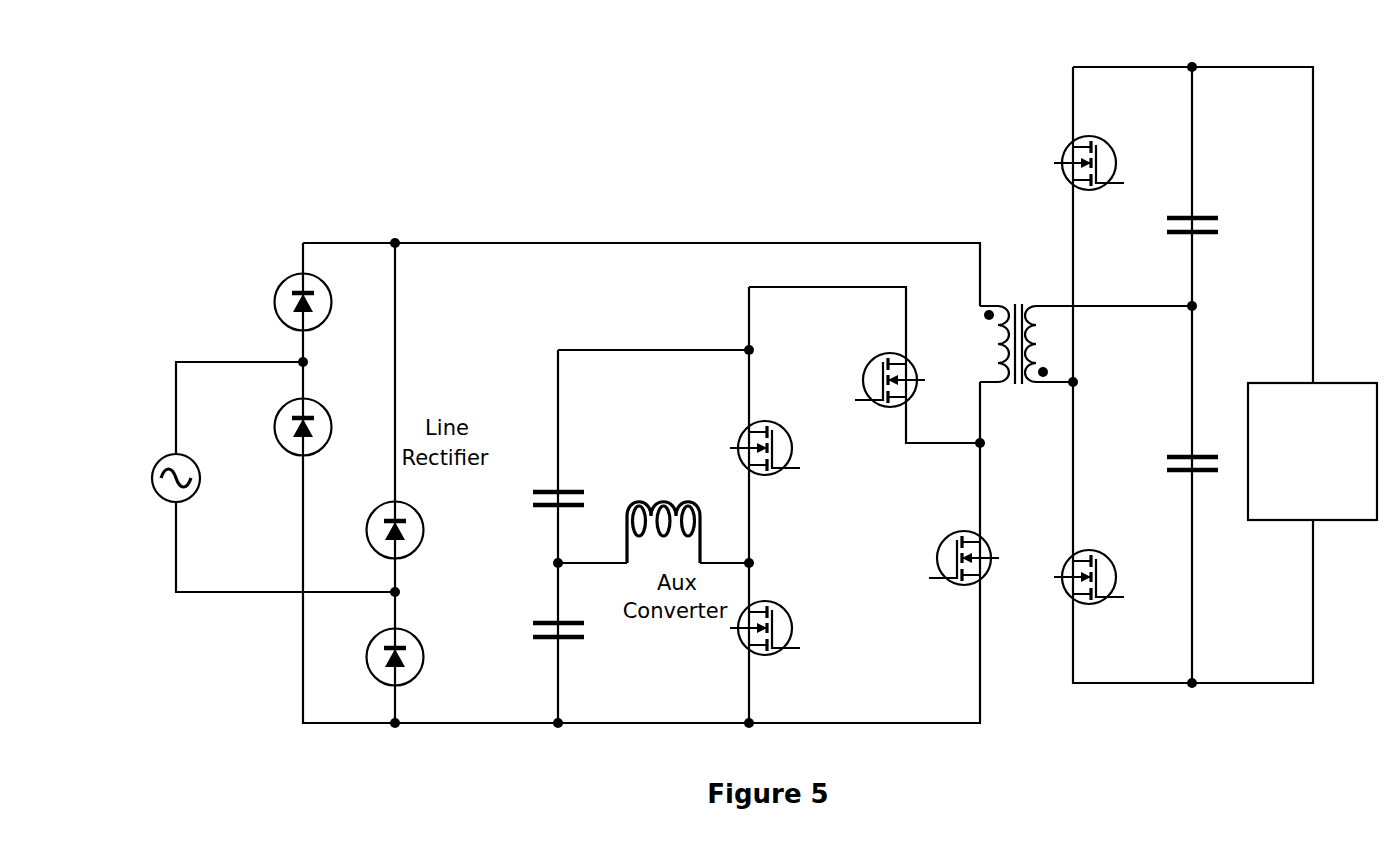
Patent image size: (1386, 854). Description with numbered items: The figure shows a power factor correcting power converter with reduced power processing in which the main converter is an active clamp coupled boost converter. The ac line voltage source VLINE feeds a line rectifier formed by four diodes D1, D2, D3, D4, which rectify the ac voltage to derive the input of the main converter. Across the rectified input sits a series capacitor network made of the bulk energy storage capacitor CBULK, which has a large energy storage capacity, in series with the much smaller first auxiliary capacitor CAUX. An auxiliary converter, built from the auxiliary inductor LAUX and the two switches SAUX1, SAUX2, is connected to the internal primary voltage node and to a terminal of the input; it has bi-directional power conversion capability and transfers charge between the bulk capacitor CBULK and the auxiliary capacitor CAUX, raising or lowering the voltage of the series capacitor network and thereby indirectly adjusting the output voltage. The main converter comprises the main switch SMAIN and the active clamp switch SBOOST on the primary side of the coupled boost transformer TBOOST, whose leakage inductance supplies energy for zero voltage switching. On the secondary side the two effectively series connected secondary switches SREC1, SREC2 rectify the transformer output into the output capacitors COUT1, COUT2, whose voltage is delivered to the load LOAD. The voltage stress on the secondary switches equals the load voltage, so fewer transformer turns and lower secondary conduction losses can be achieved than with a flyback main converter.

The ac line voltage source VLINE is at (177, 467).
The line rectifier diode D1 is at (318, 302).
The line rectifier diode D2 is at (318, 427).
The line rectifier diode D3 is at (411, 530).
The line rectifier diode D4 is at (411, 657).
The bulk energy storage capacitor CBULK is at (528, 503).
The first auxiliary capacitor CAUX is at (532, 631).
The auxiliary inductor LAUX is at (663, 517).
The auxiliary converter switch SAUX1 is at (765, 435).
The auxiliary converter switch SAUX2 is at (765, 615).
The active clamp switch SBOOST is at (890, 364).
The main switch SMAIN is at (964, 543).
The coupled boost transformer TBOOST is at (1026, 334).
The secondary rectifier switch SREC1 is at (1089, 562).
The secondary rectifier switch SREC2 is at (1089, 147).
The output capacitor COUT1 is at (1160, 468).
The output capacitor COUT2 is at (1160, 228).
The load LOAD is at (1312, 451).